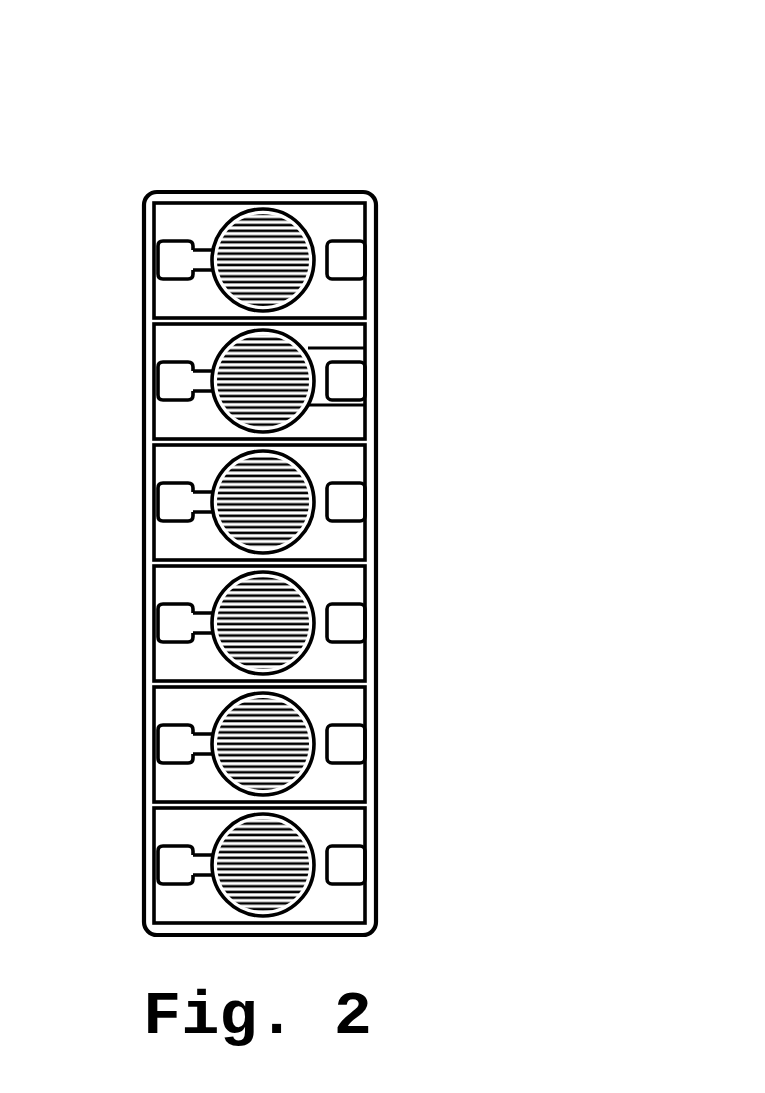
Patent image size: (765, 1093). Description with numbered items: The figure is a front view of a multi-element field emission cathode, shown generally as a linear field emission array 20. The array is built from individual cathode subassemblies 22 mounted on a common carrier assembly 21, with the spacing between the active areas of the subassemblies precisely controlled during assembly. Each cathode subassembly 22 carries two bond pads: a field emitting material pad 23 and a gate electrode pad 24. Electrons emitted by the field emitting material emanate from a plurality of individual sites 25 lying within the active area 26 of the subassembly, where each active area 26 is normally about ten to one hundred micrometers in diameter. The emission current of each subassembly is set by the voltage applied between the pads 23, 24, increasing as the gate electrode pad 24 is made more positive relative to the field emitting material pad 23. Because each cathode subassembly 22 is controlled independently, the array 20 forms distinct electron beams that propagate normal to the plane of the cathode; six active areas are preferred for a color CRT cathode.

The linear field emission array 20 is at (452, 76).
The common carrier assembly 21 is at (340, 191).
The cathode subassembly 22 is at (170, 297).
The field emitting material pad 23 is at (347, 262).
The gate electrode pad 24 is at (175, 262).
The individual sites 25 is at (366, 348).
The active area 26 is at (366, 405).